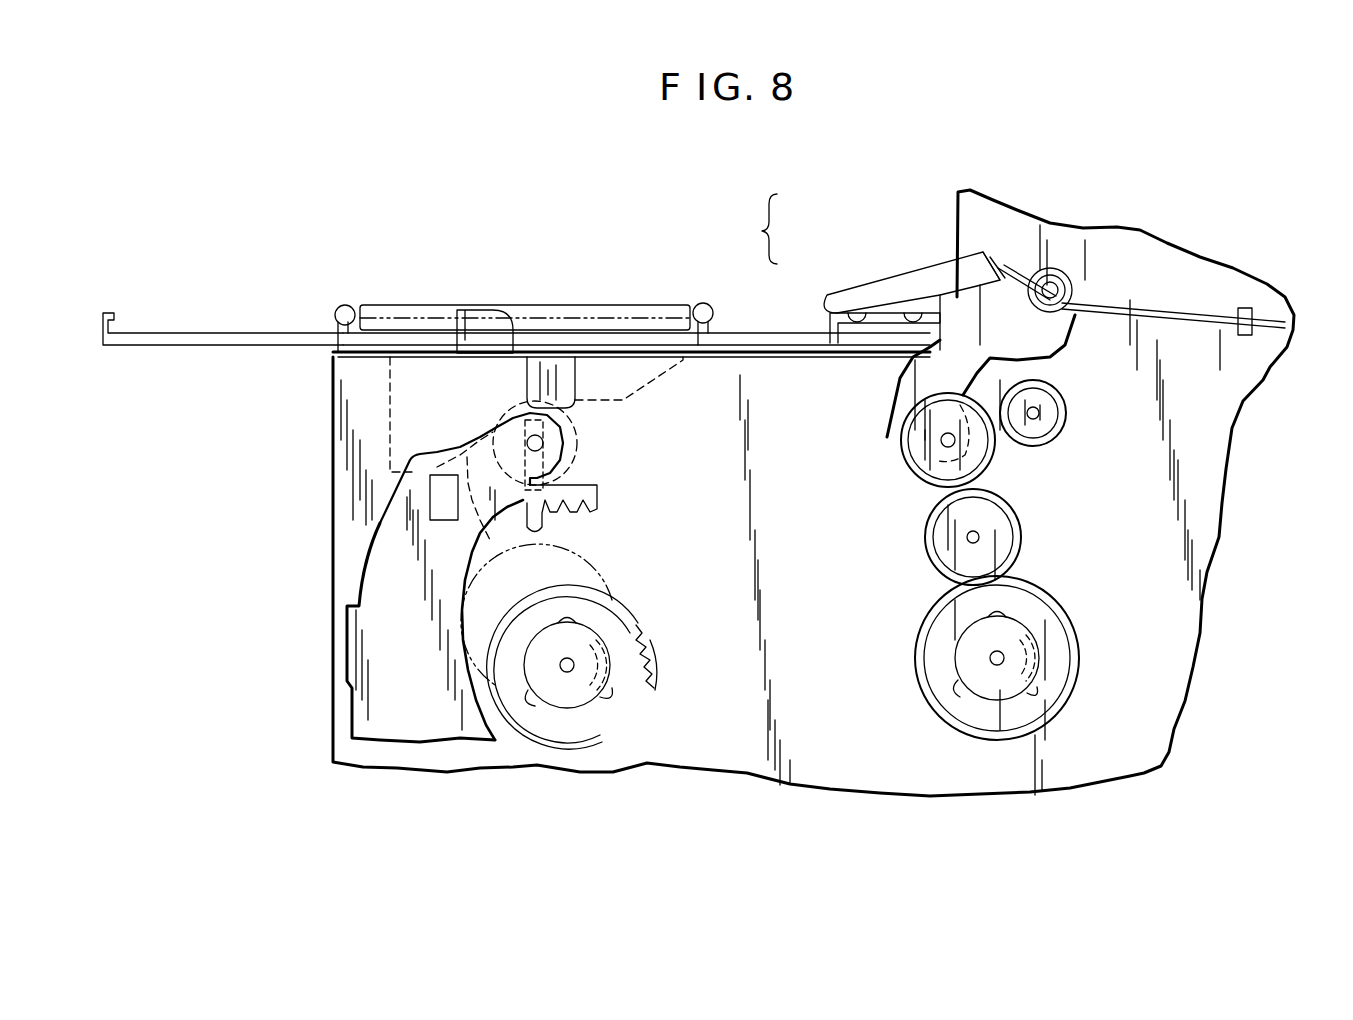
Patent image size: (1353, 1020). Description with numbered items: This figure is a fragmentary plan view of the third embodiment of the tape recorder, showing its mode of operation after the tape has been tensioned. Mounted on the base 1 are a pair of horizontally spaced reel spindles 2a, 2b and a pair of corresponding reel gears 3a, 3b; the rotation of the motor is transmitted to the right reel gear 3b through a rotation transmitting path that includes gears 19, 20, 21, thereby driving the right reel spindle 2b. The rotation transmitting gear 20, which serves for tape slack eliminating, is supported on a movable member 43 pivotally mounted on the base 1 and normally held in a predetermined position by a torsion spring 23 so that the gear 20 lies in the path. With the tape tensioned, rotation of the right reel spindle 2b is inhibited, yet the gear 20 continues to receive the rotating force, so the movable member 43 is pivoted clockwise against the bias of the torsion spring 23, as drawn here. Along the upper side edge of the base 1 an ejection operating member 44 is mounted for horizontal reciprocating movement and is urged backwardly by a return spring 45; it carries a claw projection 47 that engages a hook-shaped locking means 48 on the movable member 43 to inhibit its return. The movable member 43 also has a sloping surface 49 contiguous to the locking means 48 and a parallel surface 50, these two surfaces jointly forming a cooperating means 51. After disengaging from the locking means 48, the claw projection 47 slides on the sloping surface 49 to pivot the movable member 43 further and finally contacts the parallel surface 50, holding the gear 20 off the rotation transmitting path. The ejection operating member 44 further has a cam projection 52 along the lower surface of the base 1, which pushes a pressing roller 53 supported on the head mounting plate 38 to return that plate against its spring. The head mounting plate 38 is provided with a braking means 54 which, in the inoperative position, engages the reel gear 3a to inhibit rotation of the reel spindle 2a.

The base 1 is at (735, 776).
The reel spindle 2a is at (560, 708).
The reel spindle 2b is at (955, 650).
The reel gear 3a is at (652, 660).
The reel gear 3b is at (1078, 650).
The gear 19 is at (1068, 417).
The rotation transmitting gear 20 is at (995, 470).
The gear 21 is at (1022, 537).
The torsion spring 23 is at (1135, 318).
The head mounting plate 38 is at (418, 750).
The movable member 43 is at (897, 380).
The ejection operating member 44 is at (145, 335).
The return spring 45 is at (395, 305).
The claw projection 47 is at (825, 322).
The locking means 48 is at (943, 263).
The sloping surface 49 is at (905, 318).
The parallel surface 50 is at (855, 315).
The cooperating means 51 is at (760, 229).
The cam projection 52 is at (490, 540).
The pressing roller 53 is at (577, 447).
The braking means 54 is at (572, 508).